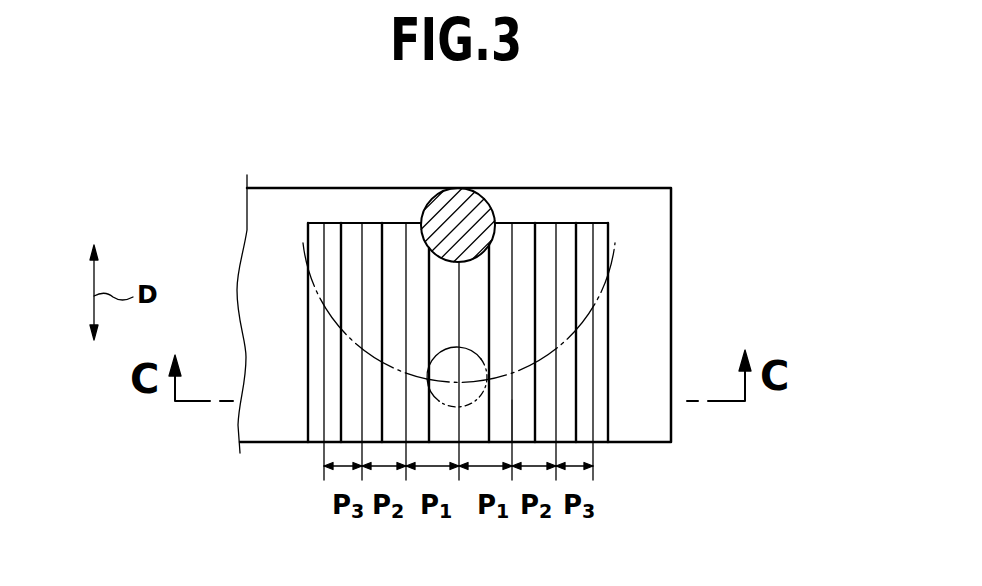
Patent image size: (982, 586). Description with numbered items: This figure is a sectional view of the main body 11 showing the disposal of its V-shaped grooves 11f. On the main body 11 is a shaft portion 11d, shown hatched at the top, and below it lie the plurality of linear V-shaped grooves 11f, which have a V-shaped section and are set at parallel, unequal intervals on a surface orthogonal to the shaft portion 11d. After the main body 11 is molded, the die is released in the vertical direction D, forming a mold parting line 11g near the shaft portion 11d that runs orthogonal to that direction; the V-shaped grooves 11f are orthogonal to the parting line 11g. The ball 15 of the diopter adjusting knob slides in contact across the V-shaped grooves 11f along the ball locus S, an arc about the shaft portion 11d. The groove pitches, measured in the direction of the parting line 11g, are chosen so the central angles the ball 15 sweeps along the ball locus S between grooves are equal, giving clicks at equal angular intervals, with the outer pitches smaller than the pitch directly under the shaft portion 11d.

The main body 11 is at (662, 217).
The shaft portion 11d is at (493, 208).
The mold parting line 11g is at (587, 222).
The V-shaped grooves 11f is at (513, 425).
The ball 15 is at (470, 352).
The ball locus S is at (597, 302).